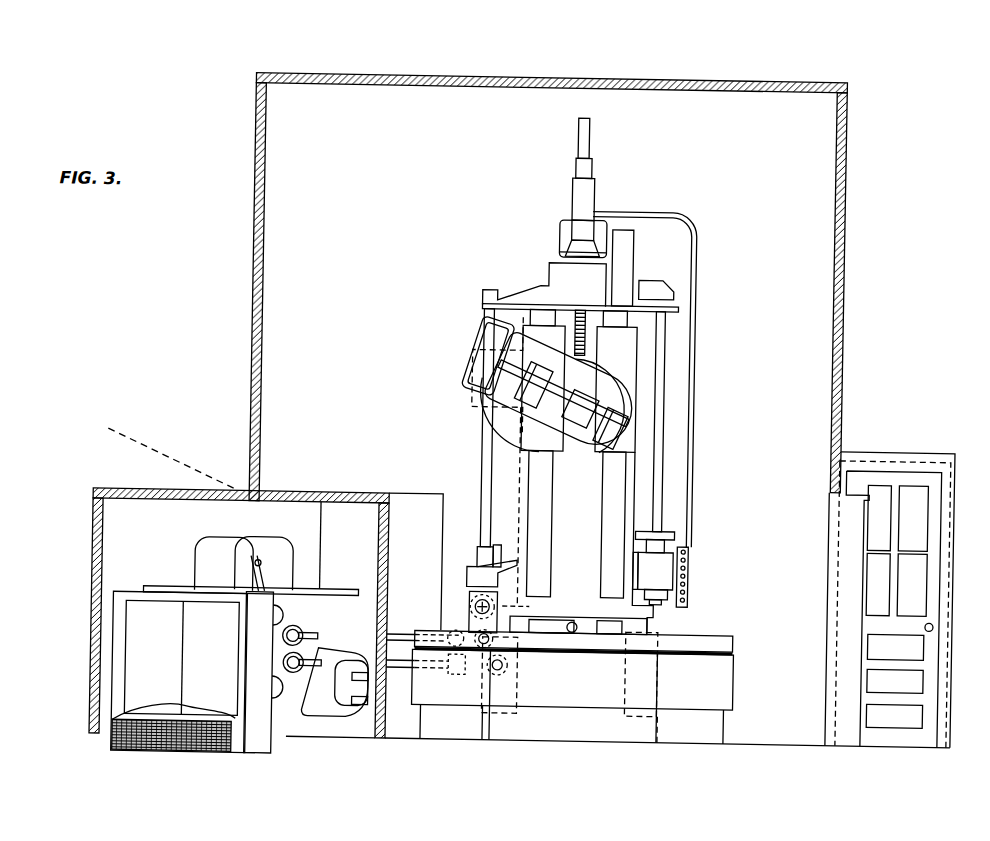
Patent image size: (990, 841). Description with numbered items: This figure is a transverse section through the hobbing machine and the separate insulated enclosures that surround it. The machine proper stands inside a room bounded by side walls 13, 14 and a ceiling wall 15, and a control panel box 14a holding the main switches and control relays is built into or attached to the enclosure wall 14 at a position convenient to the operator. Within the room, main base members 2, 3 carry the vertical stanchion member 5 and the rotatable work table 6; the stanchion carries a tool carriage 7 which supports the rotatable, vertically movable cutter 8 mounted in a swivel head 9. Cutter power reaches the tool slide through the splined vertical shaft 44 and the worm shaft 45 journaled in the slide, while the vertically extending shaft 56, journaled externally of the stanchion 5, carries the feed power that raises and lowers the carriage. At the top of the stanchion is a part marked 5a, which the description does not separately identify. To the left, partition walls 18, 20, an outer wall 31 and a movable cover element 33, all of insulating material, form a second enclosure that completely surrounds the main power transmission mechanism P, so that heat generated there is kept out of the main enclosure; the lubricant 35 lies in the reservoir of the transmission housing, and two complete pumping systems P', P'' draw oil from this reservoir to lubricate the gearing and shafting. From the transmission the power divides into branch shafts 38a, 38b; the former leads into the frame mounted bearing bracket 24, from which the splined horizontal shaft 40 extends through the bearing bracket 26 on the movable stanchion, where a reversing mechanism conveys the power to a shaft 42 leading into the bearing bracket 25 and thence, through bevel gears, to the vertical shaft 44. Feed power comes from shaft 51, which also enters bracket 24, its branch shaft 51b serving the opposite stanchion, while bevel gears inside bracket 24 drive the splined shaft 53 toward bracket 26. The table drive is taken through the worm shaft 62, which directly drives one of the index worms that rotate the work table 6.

The ceiling wall 15 is at (762, 78).
The side wall 13 is at (261, 295).
The side wall 14 is at (842, 295).
The control panel box 14a is at (847, 543).
The spindle clamp 5a is at (553, 234).
The tool carriage 7 is at (616, 382).
The vertically extending shaft 56 is at (689, 355).
The swivel head 9 is at (607, 384).
The hobbing cutter 8 is at (586, 400).
The worm shaft 45 is at (476, 394).
The splined vertical shaft 44 is at (482, 471).
The vertical stanchion member 5 is at (566, 496).
The movable cover element 33 is at (145, 497).
The partition wall 20 is at (349, 497).
The partition wall 18 is at (390, 546).
The outer wall 31 is at (94, 581).
The main power transmission mechanism P is at (251, 565).
The bearing bracket 25 is at (472, 602).
The bearing bracket 26 is at (467, 624).
The branch shaft 38a is at (403, 638).
The shaft 42 is at (527, 606).
The rotatable work table 6 is at (725, 625).
The splined horizontal shaft 40 is at (524, 648).
The splined shaft 53 is at (526, 678).
The feed shaft 51 is at (408, 674).
The frame mounted bearing bracket 24 is at (466, 686).
The main base member 2 is at (626, 691).
The main base member 3 is at (731, 688).
The pumping system P' is at (267, 618).
The pumping system P'' is at (266, 688).
The branch shaft 38b is at (315, 634).
The branch shaft 51b is at (318, 664).
The worm shaft 62 is at (359, 659).
The lubricant 35 is at (170, 749).